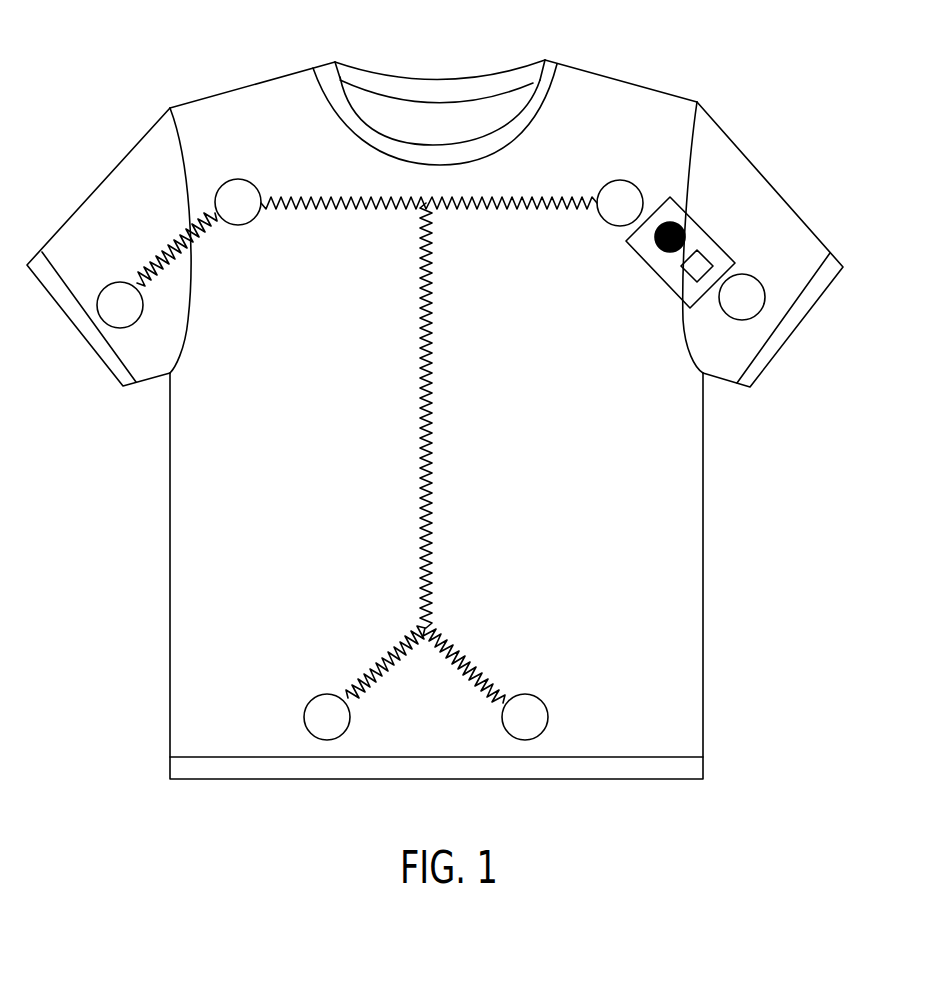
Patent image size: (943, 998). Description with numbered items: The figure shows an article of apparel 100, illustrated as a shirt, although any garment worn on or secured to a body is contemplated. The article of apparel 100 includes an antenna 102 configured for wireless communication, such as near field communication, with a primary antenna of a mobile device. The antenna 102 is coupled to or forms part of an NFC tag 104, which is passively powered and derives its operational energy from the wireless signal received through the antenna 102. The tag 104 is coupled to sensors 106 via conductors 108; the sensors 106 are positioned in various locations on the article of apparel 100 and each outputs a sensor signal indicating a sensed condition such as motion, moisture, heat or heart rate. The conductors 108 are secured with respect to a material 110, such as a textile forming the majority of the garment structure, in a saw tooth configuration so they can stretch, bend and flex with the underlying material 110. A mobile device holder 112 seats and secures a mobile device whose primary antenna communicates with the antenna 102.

The article of apparel 100 is at (600, 75).
The antenna 102 is at (690, 238).
The NFC tag 104 is at (713, 270).
The sensors 106 is at (120, 282).
The conductors 108 is at (513, 207).
The material 110 is at (704, 452).
The mobile device holder 112 is at (688, 217).